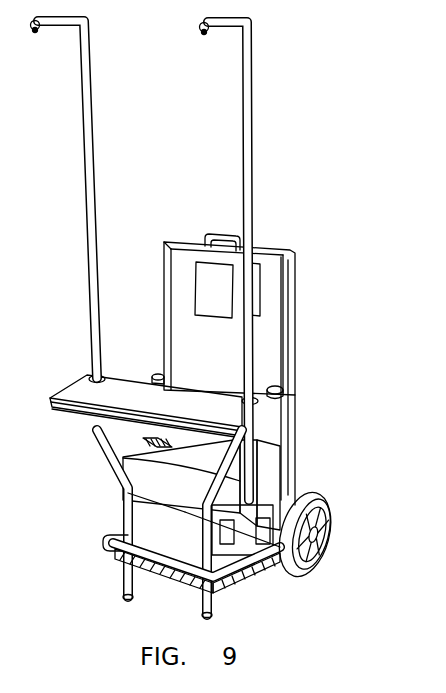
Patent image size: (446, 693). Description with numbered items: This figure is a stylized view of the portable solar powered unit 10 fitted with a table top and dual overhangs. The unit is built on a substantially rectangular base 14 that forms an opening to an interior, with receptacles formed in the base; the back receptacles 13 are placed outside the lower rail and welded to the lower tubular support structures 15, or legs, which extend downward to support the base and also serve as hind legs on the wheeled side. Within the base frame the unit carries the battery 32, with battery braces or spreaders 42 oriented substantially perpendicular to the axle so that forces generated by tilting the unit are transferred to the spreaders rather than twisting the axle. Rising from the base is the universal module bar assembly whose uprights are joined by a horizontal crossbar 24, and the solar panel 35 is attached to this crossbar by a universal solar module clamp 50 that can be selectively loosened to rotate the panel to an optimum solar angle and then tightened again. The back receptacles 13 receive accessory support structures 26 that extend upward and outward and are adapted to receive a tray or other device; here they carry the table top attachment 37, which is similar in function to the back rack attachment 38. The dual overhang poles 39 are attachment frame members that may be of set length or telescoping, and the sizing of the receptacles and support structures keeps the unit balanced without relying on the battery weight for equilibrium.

The portable solar powered unit 10 is at (324, 395).
The back receptacles 13 is at (200, 548).
The base 14 is at (101, 531).
The support structures 15 is at (201, 602).
The crossbar 24 is at (211, 386).
The accessory support structures 26 is at (200, 515).
The battery 32 is at (236, 452).
The solar panel 35 is at (272, 256).
The table top attachment 37 is at (83, 395).
The back rack attachment 38 is at (75, 418).
The overhang pole 39 is at (242, 112).
The spreaders 42 is at (150, 570).
The universal solar module clamp 50 is at (153, 389).